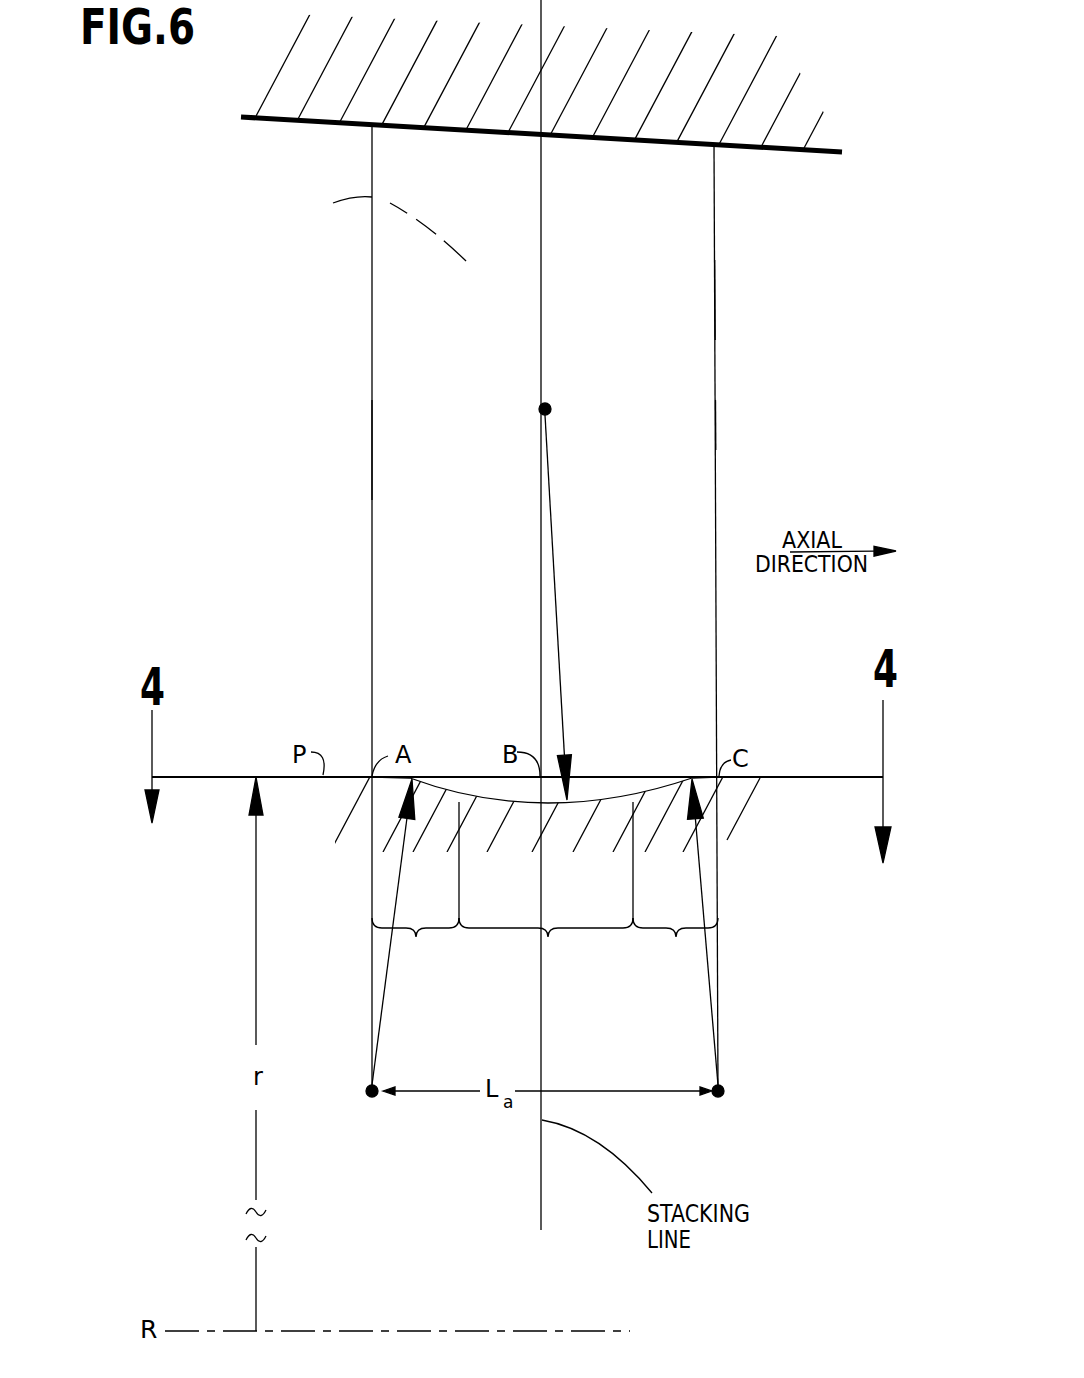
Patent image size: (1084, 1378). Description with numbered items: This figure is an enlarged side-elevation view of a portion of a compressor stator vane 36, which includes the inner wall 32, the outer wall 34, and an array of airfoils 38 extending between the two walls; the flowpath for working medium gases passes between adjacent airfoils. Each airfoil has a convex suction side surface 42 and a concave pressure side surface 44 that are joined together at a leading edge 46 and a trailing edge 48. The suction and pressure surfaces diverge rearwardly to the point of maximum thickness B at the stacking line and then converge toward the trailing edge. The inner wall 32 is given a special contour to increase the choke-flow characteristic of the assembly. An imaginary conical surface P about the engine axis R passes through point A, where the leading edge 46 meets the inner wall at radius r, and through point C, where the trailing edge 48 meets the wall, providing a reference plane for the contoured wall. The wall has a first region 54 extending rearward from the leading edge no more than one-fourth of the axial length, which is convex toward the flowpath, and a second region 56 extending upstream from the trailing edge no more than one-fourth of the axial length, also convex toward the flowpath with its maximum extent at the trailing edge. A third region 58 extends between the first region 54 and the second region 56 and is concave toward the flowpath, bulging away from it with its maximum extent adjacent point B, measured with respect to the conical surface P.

The inner wall 32 is at (757, 776).
The outer wall 34 is at (290, 121).
The compressor stator vane 36 is at (478, 608).
The airfoils 38 is at (621, 521).
The suction side surface 42 is at (387, 225).
The pressure side surface 44 is at (715, 300).
The leading edge 46 is at (372, 450).
The trailing edge 48 is at (716, 418).
The first region 54 is at (415, 943).
The second region 56 is at (675, 943).
The third region 58 is at (546, 885).